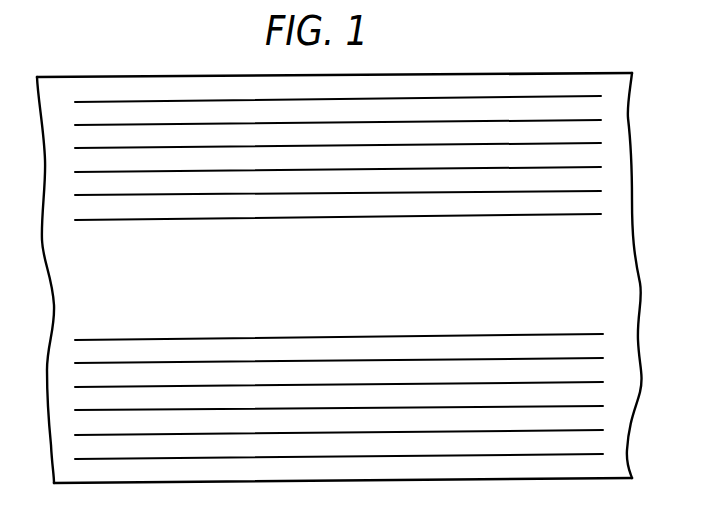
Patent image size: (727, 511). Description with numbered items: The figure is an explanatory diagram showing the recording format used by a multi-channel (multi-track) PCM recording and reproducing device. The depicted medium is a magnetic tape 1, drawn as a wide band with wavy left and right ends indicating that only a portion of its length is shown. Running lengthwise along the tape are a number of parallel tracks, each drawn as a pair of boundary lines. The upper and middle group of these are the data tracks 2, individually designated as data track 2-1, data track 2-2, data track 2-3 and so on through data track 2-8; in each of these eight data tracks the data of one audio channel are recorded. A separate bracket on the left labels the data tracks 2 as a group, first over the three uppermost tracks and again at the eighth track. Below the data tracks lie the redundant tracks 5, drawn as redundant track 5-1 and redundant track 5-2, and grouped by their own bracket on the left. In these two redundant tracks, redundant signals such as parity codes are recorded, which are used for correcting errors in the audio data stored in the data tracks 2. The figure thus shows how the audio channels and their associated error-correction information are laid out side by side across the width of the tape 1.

The magnetic tape 1 is at (577, 73).
The data tracks 2 is at (77, 207).
The data track 2-1 is at (593, 108).
The data track 2-2 is at (592, 155).
The data track 2-3 is at (593, 202).
The data track 2-8 is at (597, 348).
The redundant tracks 5 is at (75, 402).
The redundant track 5-1 is at (593, 393).
The redundant track 5-2 is at (597, 442).